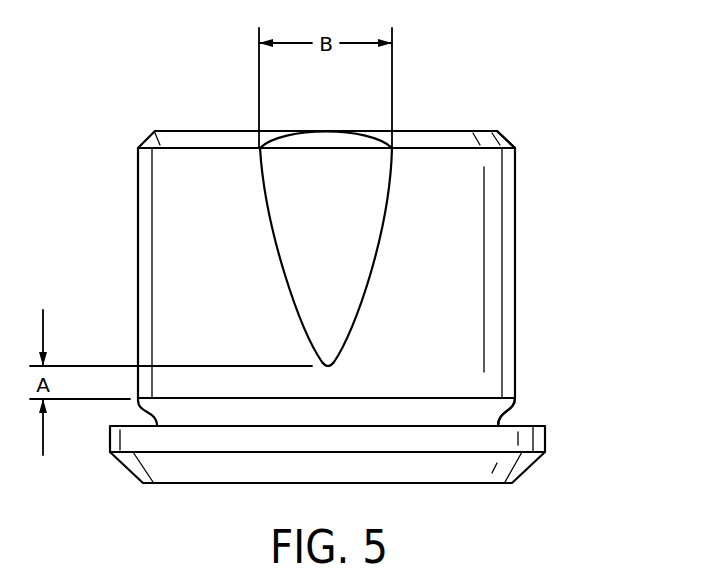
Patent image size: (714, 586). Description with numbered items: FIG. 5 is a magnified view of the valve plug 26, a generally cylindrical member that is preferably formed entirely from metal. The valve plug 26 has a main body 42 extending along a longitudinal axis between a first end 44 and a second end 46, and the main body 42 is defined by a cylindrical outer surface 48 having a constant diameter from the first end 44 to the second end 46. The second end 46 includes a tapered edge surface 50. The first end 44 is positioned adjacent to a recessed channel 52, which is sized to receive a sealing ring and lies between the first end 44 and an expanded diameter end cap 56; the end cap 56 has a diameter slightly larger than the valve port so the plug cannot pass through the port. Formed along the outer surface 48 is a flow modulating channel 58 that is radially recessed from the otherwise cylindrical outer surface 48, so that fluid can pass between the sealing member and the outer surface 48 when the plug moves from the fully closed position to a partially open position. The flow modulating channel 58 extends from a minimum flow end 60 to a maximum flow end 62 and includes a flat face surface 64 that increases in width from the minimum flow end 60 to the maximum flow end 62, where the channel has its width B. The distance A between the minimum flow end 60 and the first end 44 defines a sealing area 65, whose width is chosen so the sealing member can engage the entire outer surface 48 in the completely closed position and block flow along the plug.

The valve plug 26 is at (536, 186).
The main body 42 is at (495, 320).
The first end 44 is at (480, 397).
The second end 46 is at (448, 148).
The cylindrical outer surface 48 is at (515, 256).
The tapered edge surface 50 is at (508, 138).
The recessed channel 52 is at (500, 417).
The end cap 56 is at (547, 440).
The flow modulating channel 58 is at (352, 226).
The minimum flow end 60 is at (328, 360).
The maximum flow end 62 is at (273, 141).
The flat face surface 64 is at (283, 207).
The sealing area 65 is at (333, 385).